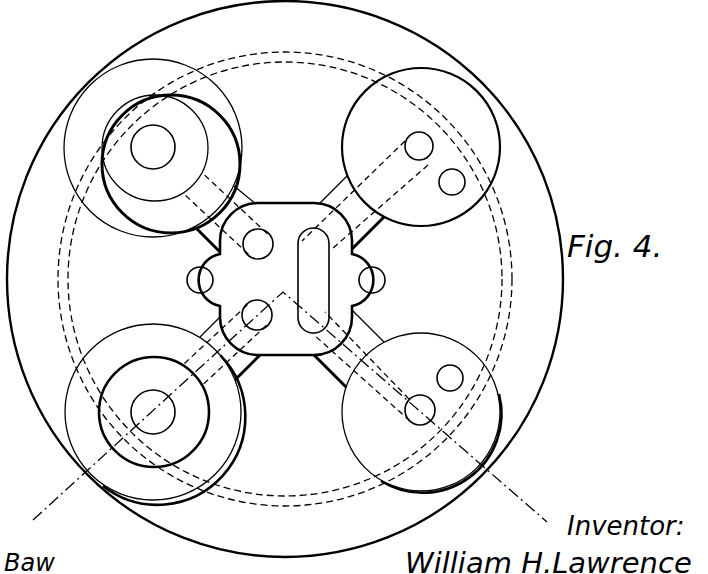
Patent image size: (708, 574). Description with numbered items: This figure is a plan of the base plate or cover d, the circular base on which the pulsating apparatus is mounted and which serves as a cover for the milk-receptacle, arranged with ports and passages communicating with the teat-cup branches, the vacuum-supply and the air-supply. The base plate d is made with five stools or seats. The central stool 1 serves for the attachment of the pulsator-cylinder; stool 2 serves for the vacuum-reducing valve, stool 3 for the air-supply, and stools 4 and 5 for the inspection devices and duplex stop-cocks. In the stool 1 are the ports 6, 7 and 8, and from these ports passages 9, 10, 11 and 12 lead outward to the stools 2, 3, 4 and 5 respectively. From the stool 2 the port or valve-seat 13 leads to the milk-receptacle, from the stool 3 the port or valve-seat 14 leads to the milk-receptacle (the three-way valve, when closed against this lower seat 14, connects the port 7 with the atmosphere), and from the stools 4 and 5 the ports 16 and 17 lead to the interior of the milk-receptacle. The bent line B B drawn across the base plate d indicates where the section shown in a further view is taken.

The stool 1 is at (286, 279).
The stool 2 is at (153, 148).
The stool 3 is at (155, 414).
The stool 4 is at (421, 147).
The stool 5 is at (422, 413).
The port 6 is at (258, 244).
The port 7 is at (257, 315).
The port 8 is at (313, 280).
The passage 9 is at (238, 193).
The passage 10 is at (234, 358).
The passage 11 is at (419, 146).
The passage 12 is at (420, 410).
The port 13 is at (153, 147).
The port 14 is at (145, 403).
The port 16 is at (453, 187).
The port 17 is at (448, 378).
The base plate d is at (455, 309).
The section line B B is at (299, 419).